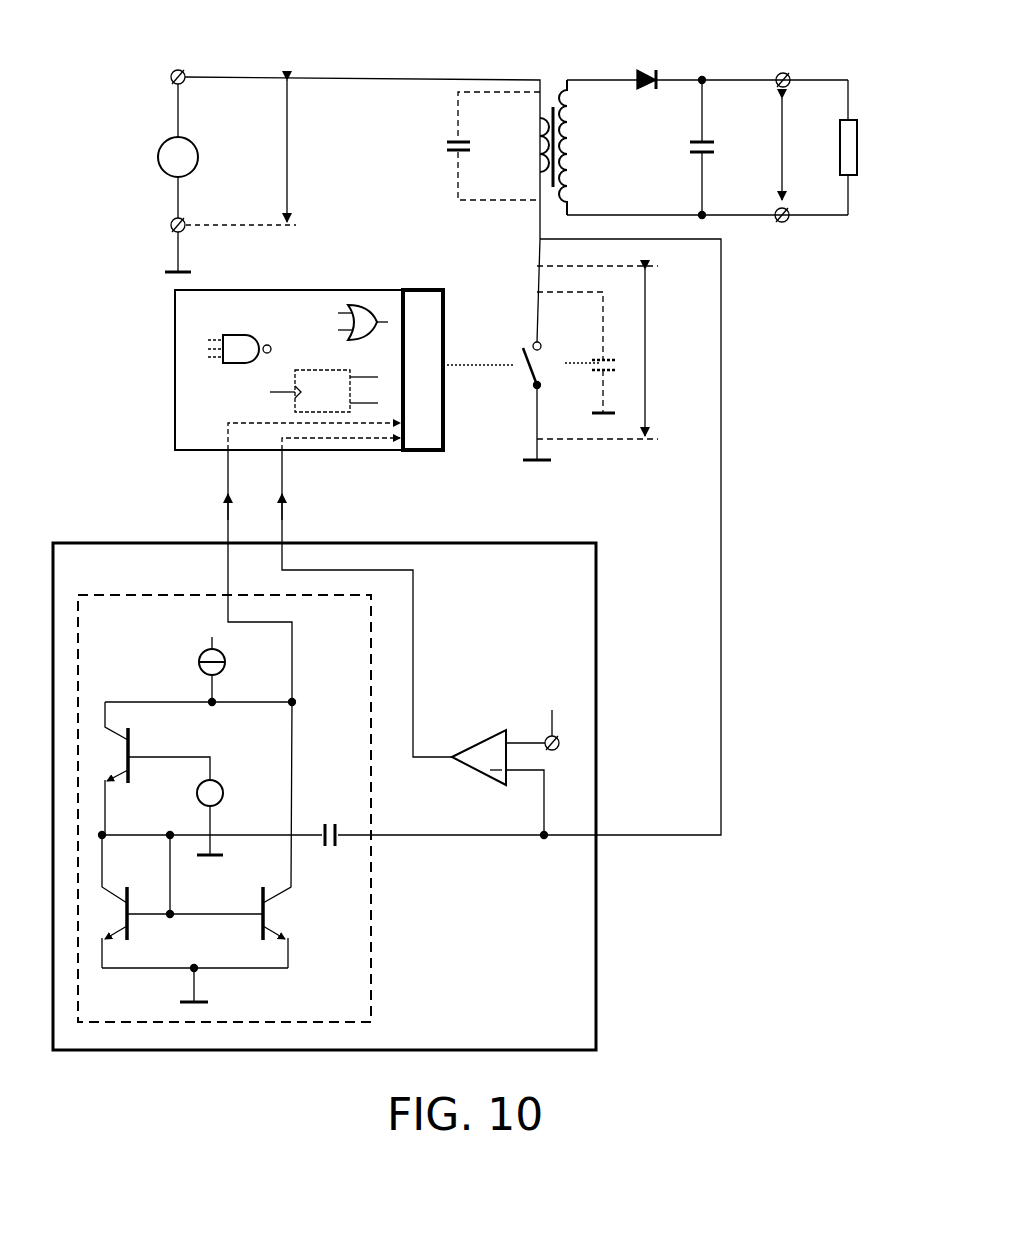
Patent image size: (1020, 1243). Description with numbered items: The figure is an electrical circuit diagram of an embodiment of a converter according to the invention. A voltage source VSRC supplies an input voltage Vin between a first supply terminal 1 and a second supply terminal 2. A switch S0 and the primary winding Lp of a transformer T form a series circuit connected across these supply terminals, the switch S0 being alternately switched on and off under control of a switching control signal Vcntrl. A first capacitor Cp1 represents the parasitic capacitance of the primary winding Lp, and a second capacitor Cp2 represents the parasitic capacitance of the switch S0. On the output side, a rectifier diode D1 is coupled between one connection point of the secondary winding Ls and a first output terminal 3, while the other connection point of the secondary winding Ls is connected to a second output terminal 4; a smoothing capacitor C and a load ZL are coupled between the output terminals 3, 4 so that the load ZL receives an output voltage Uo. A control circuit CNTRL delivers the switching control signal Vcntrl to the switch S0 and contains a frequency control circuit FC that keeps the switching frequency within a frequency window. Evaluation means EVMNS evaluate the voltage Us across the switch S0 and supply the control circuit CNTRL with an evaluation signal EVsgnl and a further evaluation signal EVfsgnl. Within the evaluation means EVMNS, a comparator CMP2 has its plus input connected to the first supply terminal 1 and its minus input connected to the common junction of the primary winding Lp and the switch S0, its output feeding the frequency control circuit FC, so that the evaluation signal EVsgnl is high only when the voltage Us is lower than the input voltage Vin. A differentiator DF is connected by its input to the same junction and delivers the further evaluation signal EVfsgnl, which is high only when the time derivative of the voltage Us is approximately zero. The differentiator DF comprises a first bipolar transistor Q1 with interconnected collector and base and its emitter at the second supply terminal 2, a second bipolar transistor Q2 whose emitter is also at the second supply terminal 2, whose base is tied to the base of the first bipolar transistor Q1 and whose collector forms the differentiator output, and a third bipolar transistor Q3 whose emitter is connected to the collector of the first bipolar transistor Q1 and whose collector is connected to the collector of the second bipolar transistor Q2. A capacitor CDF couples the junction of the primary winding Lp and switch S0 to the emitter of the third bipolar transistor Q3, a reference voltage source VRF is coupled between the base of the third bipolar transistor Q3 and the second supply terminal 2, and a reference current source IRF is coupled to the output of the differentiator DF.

The first supply terminal 1 is at (171, 77).
The second supply terminal 2 is at (171, 225).
The first output terminal 3 is at (777, 73).
The second output terminal 4 is at (788, 222).
The voltage source VSRC is at (157, 157).
The input voltage Vin is at (290, 163).
The first capacitor Cp1 is at (445, 146).
The transformer T is at (554, 111).
The primary winding Lp is at (546, 133).
The secondary winding Ls is at (568, 136).
The rectifier diode D1 is at (643, 70).
The smoothing capacitor C is at (689, 148).
The output voltage Uo is at (777, 148).
The load ZL is at (838, 146).
The control circuit CNTRL is at (175, 365).
The frequency control circuit FC is at (424, 300).
The switching control signal Vcntrl is at (472, 372).
The switch S0 is at (520, 355).
The second capacitor Cp2 is at (576, 352).
The voltage across the switch Us is at (648, 347).
The evaluation signal EVsgnl is at (222, 497).
The further evaluation signal EVfsgnl is at (284, 496).
The evaluation means EVMNS is at (598, 921).
The differentiator DF is at (372, 960).
The reference current source IRF is at (199, 656).
The first bipolar transistor Q1 is at (132, 934).
The second bipolar transistor Q2 is at (284, 913).
The third bipolar transistor Q3 is at (135, 743).
The reference voltage source VRF is at (222, 785).
The capacitor CDF is at (328, 822).
The comparator CMP2 is at (472, 740).